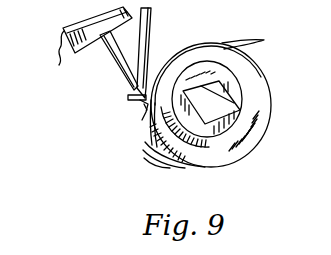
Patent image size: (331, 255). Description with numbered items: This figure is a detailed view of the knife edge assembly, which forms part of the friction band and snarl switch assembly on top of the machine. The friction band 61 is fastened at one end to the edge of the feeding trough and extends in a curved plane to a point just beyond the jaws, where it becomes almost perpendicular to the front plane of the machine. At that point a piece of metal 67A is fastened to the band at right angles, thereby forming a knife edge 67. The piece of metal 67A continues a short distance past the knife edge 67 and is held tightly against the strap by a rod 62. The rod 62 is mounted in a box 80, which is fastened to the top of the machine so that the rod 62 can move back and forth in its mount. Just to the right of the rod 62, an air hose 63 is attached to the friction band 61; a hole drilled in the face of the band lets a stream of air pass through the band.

The friction band 61 is at (256, 40).
The rod 62 is at (136, 91).
The air hose 63 is at (151, 14).
The knife edge 67 is at (140, 103).
The piece of metal 67A is at (130, 98).
The box 80 is at (59, 65).